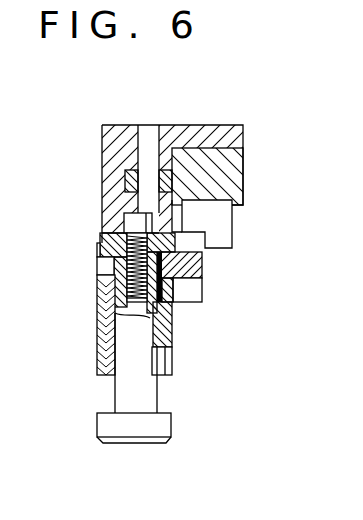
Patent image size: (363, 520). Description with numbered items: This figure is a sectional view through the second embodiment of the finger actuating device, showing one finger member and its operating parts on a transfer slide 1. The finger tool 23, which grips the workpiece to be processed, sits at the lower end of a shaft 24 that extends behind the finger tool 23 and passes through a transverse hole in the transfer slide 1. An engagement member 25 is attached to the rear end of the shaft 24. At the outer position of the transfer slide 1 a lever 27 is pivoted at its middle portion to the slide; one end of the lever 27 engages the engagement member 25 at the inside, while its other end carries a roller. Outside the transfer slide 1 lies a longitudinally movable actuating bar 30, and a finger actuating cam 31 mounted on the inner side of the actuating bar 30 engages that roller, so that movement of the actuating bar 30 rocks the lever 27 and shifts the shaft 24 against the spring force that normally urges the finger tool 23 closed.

The transfer slide 1 is at (118, 155).
The actuating bar 30 is at (228, 170).
The finger actuating cam 31 is at (232, 226).
The engagement member 25 is at (118, 248).
The lever 27 is at (190, 285).
The shaft 24 is at (143, 393).
The finger tool 23 is at (163, 422).